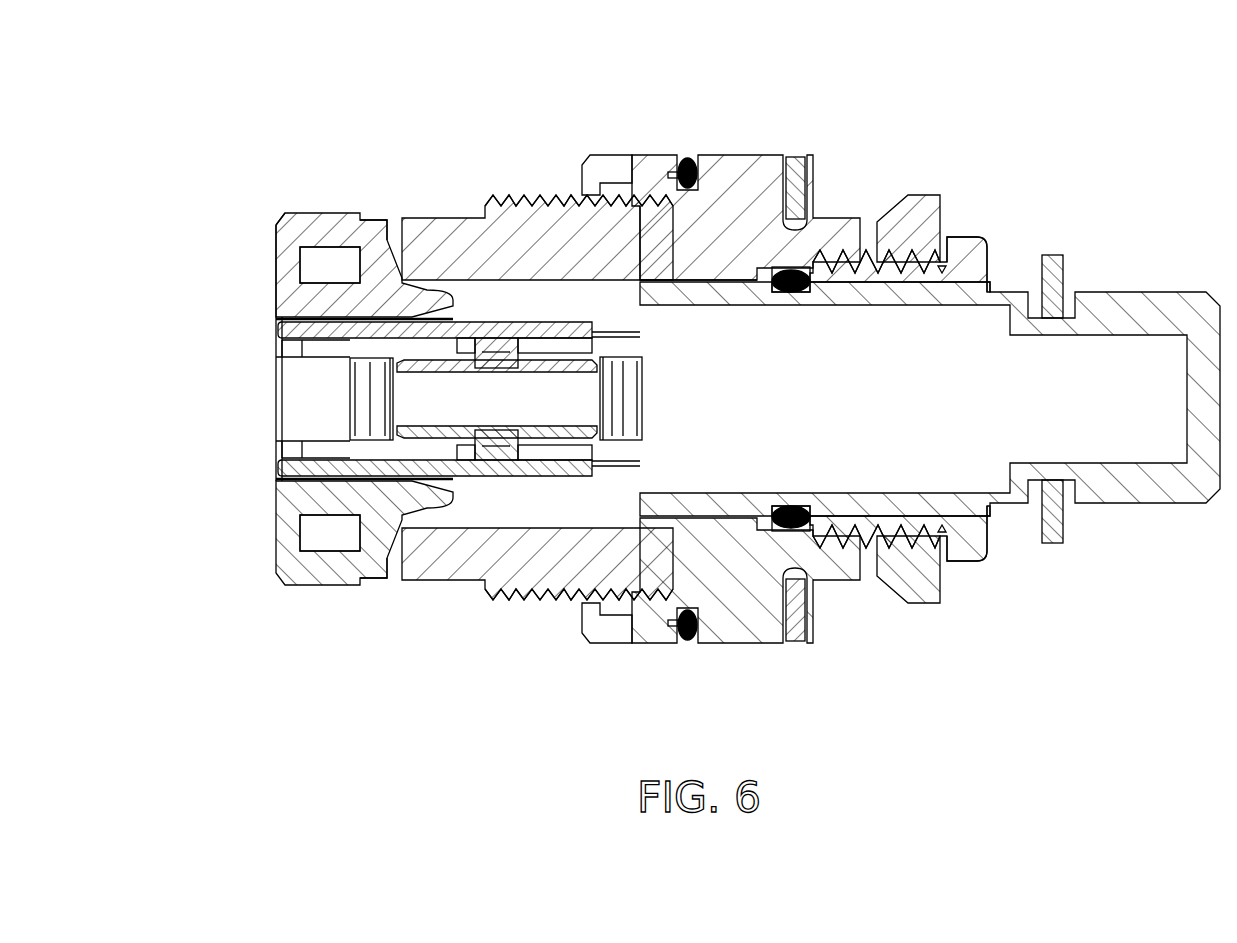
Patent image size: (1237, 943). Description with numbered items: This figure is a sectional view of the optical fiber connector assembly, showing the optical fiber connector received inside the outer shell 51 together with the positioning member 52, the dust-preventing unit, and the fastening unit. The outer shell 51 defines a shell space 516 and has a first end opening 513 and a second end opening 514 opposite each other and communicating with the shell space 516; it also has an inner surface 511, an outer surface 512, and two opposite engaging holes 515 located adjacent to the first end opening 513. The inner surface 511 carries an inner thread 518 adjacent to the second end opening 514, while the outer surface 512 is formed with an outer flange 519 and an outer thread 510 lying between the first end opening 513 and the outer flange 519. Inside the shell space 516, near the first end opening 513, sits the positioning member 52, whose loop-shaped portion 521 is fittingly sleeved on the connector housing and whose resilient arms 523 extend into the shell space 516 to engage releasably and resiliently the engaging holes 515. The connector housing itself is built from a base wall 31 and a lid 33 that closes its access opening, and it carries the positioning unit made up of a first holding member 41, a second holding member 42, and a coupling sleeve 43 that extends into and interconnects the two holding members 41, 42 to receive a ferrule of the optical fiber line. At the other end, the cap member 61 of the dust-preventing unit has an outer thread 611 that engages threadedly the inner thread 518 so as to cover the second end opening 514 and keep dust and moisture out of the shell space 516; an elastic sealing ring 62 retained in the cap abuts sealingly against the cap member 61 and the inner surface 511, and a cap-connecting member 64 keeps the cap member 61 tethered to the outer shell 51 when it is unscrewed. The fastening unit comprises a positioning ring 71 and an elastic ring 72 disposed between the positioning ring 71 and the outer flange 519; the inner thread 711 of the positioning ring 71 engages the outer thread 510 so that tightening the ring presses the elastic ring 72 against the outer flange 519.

The base wall 31 is at (518, 462).
The lid 33 is at (515, 335).
The first holding member 41 is at (644, 403).
The second holding member 42 is at (349, 412).
The coupling sleeve 43 is at (560, 438).
The outer shell 51 is at (830, 582).
The positioning member 52 is at (274, 516).
The cap member 61 is at (1190, 292).
The elastic sealing ring 62 is at (790, 520).
The cap-connecting member 64 is at (1053, 545).
The positioning ring 71 is at (650, 155).
The elastic ring 72 is at (690, 160).
The outer thread 510 is at (565, 196).
The inner surface 511 is at (672, 293).
The outer surface 512 is at (452, 220).
The first end opening 513 is at (277, 240).
The second end opening 514 is at (937, 545).
The engaging holes 515 is at (375, 220).
The shell space 516 is at (475, 503).
The inner thread 518 is at (918, 272).
The outer flange 519 is at (790, 157).
The loop-shaped portion 521 is at (276, 294).
The resilient arms 523 is at (322, 272).
The outer thread 611 is at (878, 240).
The inner thread 711 is at (613, 206).